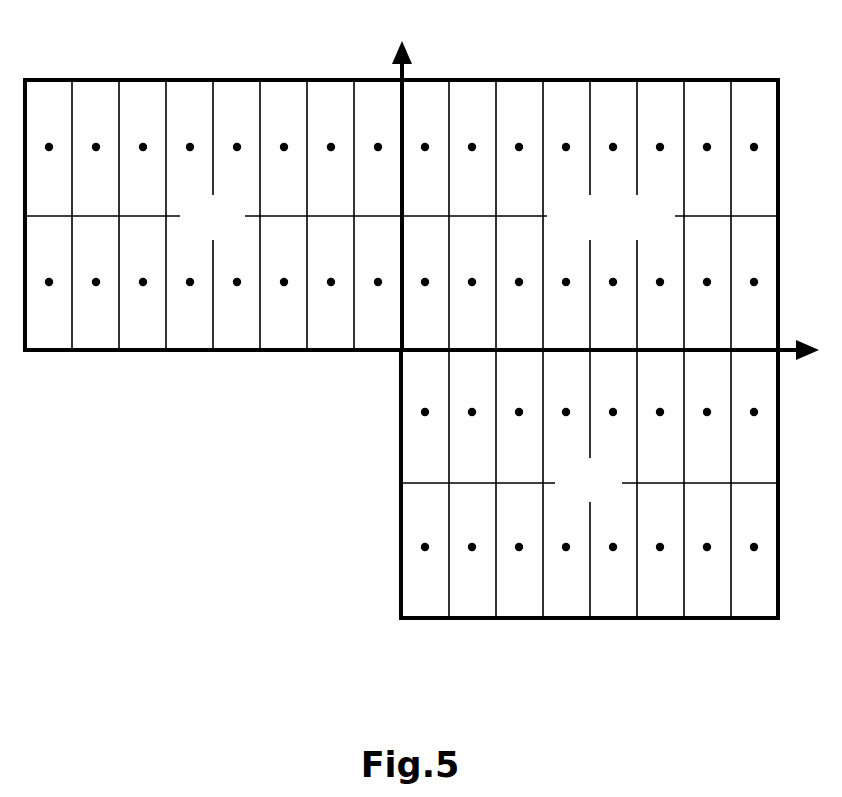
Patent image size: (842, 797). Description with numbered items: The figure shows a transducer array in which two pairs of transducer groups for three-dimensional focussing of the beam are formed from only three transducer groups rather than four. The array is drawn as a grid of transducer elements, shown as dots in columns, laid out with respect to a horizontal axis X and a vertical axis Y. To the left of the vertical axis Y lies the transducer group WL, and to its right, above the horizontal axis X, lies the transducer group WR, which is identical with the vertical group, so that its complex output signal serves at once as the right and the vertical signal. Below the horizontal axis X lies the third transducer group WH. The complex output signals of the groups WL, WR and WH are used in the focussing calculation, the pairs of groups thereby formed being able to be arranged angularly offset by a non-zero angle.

The transducer group WL is at (213, 215).
The transducer group WR is at (590, 215).
The transducer group WH is at (589, 484).
The X axis X is at (610, 367).
The Y axis Y is at (410, 179).